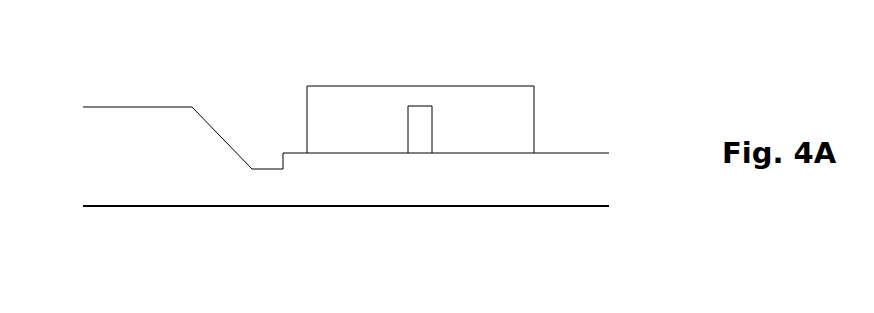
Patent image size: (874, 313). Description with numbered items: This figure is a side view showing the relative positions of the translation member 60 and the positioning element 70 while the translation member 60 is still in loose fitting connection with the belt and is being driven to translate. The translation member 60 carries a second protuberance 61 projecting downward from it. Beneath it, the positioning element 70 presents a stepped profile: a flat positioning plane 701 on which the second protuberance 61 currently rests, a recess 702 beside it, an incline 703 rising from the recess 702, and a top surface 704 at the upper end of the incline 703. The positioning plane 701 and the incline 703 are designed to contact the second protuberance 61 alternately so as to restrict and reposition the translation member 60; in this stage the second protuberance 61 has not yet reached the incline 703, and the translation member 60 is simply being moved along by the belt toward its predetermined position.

The positioning element 70 is at (538, 206).
The positioning plane 701 is at (342, 153).
The recess 702 is at (264, 169).
The incline 703 is at (214, 130).
The top surface 704 is at (124, 107).
The translation member 60 is at (513, 86).
The second protuberance 61 is at (425, 106).